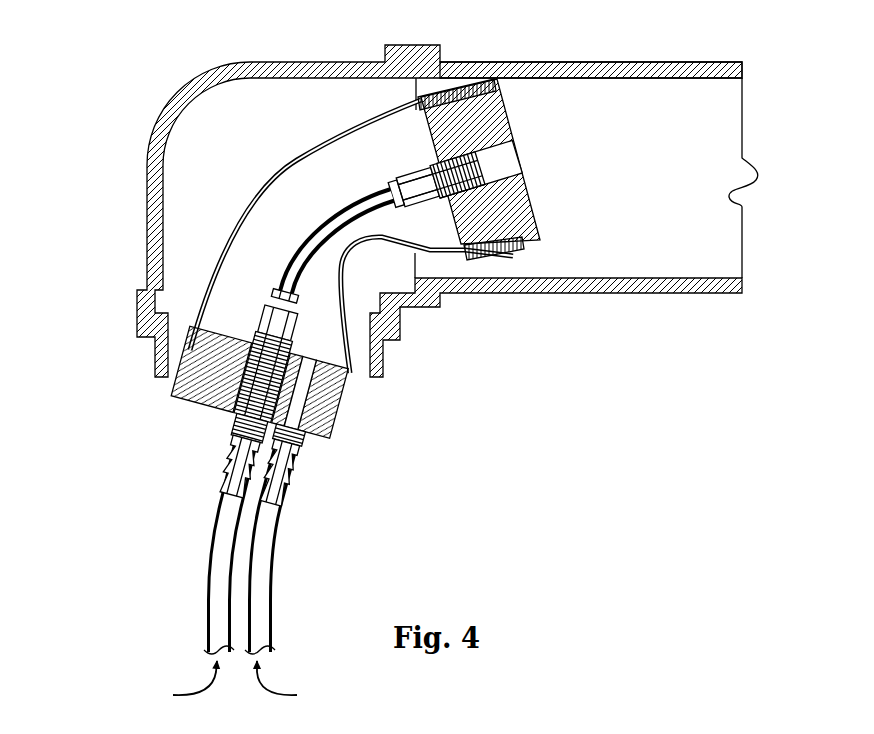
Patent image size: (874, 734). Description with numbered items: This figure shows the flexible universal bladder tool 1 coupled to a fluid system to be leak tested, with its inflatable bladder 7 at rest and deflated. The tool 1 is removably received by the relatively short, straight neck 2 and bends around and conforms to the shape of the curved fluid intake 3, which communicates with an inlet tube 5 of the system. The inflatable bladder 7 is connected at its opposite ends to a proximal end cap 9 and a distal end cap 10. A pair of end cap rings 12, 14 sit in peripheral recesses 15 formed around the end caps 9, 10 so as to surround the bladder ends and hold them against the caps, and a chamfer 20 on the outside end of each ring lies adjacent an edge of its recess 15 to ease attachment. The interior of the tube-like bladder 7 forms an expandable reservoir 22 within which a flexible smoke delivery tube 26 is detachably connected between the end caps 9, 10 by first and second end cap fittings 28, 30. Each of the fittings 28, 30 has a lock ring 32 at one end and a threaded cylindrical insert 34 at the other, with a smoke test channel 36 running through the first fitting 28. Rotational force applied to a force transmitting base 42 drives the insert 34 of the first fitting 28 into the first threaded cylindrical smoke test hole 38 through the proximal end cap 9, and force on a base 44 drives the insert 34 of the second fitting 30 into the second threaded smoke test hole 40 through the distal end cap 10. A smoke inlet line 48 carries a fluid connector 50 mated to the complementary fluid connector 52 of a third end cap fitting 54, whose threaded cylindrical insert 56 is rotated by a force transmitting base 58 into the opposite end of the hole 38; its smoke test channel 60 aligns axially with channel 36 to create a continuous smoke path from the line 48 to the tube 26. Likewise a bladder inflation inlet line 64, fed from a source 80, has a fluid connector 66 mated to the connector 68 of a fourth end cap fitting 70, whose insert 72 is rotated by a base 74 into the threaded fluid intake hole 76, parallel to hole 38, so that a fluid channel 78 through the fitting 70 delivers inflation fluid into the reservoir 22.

The flexible universal bladder tool 1 is at (256, 172).
The straight neck 2 is at (383, 357).
The curved fluid intake 3 is at (250, 60).
The inlet tube 5 is at (580, 62).
The inflatable bladder 7 is at (305, 225).
The proximal end cap 9 is at (259, 382).
The distal end cap 10 is at (355, 245).
The end cap ring 12 is at (259, 382).
The end cap ring 14 is at (470, 252).
The peripheral recess 15 is at (525, 213).
The chamfer 20 is at (503, 62).
The expandable reservoir 22 is at (343, 170).
The flexible smoke delivery tube 26 is at (331, 218).
The first end cap fitting 28 is at (269, 354).
The second end cap fitting 30 is at (436, 182).
The lock ring 32 is at (396, 193).
The threaded cylindrical insert 34 is at (470, 150).
The smoke test channel 36 is at (440, 180).
The first threaded cylindrical smoke test hole 38 is at (300, 393).
The second threaded cylindrical smoke test hole 40 is at (479, 168).
The force transmitting base 42 is at (278, 323).
The force transmitting base 44 is at (503, 168).
The smoke inlet line 48 is at (207, 618).
The fluid connector 50 is at (239, 466).
The fluid connector 52 is at (239, 466).
The third end cap fitting 54 is at (239, 466).
The threaded cylindrical insert 56 is at (249, 428).
The force transmitting base 58 is at (249, 428).
The smoke test channel 60 is at (239, 466).
The bladder inflation inlet line 64 is at (270, 618).
The fluid connector 66 is at (278, 473).
The fluid connector 68 is at (278, 473).
The fourth end cap fitting 70 is at (289, 435).
The threaded cylindrical insert 72 is at (289, 435).
The force transmitting base 74 is at (278, 473).
The threaded fluid intake hole 76 is at (323, 399).
The fluid channel 78 is at (278, 473).
The air source 80 is at (302, 684).